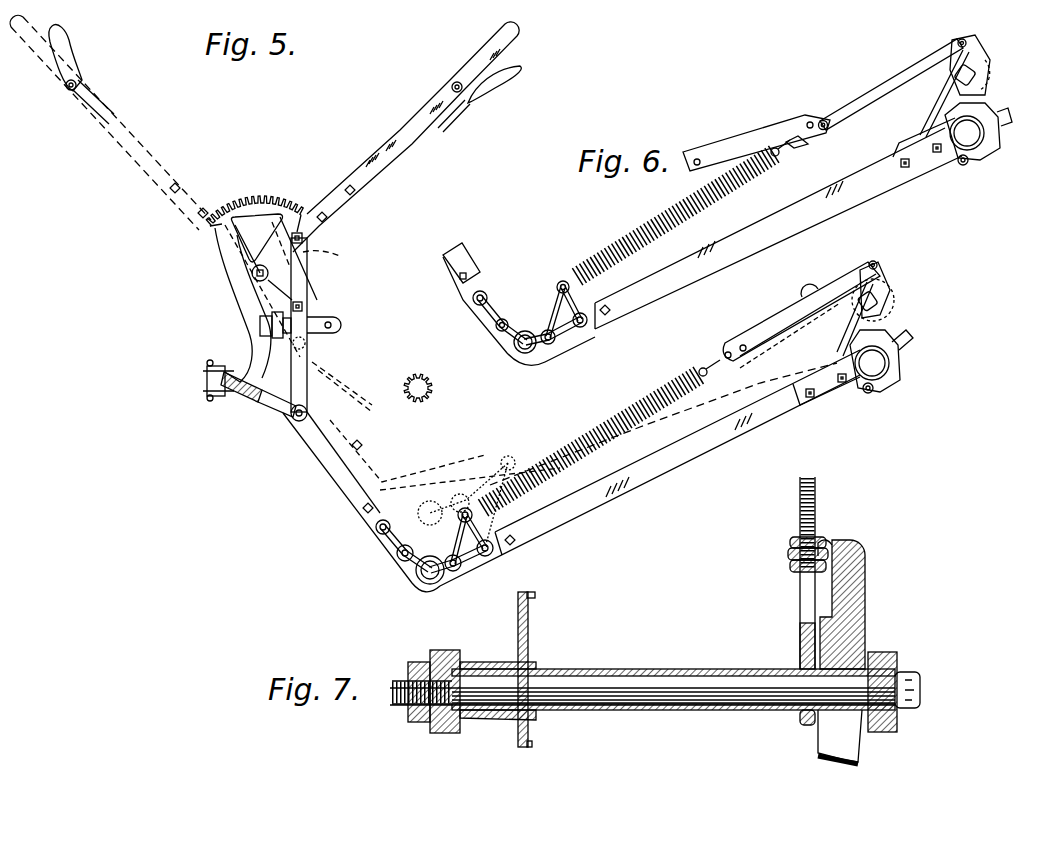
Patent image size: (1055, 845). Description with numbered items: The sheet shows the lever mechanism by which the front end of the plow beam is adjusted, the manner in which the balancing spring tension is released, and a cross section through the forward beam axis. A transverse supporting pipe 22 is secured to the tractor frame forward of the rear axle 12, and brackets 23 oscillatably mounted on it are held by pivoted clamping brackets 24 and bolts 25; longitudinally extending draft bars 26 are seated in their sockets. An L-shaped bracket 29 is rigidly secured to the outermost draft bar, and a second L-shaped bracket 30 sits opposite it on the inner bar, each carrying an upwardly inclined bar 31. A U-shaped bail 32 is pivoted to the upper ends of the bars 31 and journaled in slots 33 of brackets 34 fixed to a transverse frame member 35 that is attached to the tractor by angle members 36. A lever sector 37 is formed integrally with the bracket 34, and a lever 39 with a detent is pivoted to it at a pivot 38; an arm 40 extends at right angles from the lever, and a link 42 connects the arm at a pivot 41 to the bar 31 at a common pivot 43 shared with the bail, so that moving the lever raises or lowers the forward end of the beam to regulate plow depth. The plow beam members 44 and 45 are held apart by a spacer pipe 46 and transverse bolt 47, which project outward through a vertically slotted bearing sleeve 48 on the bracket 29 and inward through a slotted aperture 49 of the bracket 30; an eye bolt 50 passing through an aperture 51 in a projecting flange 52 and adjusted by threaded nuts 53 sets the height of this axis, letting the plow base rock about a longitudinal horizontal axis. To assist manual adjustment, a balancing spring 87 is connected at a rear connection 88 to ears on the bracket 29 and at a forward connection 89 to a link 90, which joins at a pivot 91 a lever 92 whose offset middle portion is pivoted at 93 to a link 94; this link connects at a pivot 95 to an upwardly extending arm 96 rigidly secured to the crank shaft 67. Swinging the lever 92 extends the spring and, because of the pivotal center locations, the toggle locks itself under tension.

In FIG. 5, the rear axle 12 is at (413, 398).
In FIG. 5, the supporting beam or pipe 22 is at (891, 372).
In FIG. 6, the supporting beam or pipe 22 is at (977, 137).
In FIG. 5, the brackets 23 is at (838, 350).
In FIG. 6, the brackets 23 is at (942, 100).
In FIG. 5, the pivoted clamping brackets 24 is at (880, 392).
In FIG. 6, the pivoted clamping brackets 24 is at (970, 163).
In FIG. 5, the bolts 25 is at (909, 336).
In FIG. 5, the draft bars 26 is at (650, 481).
In FIG. 6, the draft bars 26 is at (727, 245).
In FIG. 5, the L-shaped bracket 29 is at (447, 577).
In FIG. 6, the L-shaped bracket 29 is at (540, 300).
In FIG. 7, the L-shaped bracket 29 is at (517, 643).
In FIG. 7, the second L-shaped bracket 30 is at (866, 592).
In FIG. 5, the upwardly inclined bars 31 is at (355, 420).
In FIG. 6, the upwardly inclined bars 31 is at (456, 265).
In FIG. 5, the U-shaped bail 32 is at (258, 408).
In FIG. 5, the slots 33 is at (206, 380).
In FIG. 5, the brackets 34 is at (252, 338).
In FIG. 5, the transverse frame member 35 is at (268, 313).
In FIG. 5, the angle members 36 is at (340, 322).
In FIG. 5, the lever sector 37 is at (260, 200).
In FIG. 5, the pivot 38 is at (250, 273).
In FIG. 5, the lever 39 is at (133, 135).
In FIG. 5, the arm 40 is at (285, 280).
In FIG. 5, the pivot 41 is at (306, 243).
In FIG. 5, the link 42 is at (298, 377).
In FIG. 5, the pivot 43 is at (302, 405).
In FIG. 7, the plow beam member 44 is at (887, 652).
In FIG. 7, the plow beam member 45 is at (446, 650).
In FIG. 7, the spacer tube or pipe 46 is at (621, 670).
In FIG. 7, the transverse bolt 47 is at (663, 693).
In FIG. 5, the bearing sleeve 48 is at (416, 574).
In FIG. 6, the bearing sleeve 48 is at (527, 335).
In FIG. 7, the bearing sleeve 48 is at (493, 721).
In FIG. 7, the vertically slotted aperture 49 is at (858, 747).
In FIG. 7, the eye bolt 50 is at (800, 638).
In FIG. 7, the aperture 51 is at (843, 537).
In FIG. 7, the outwardly projecting flange 52 is at (788, 553).
In FIG. 7, the threaded nuts 53 is at (797, 536).
In FIG. 5, the crank shaft 67 is at (893, 303).
In FIG. 6, the crank shaft 67 is at (990, 70).
In FIG. 5, the balancing springs 87 is at (620, 413).
In FIG. 6, the balancing springs 87 is at (642, 224).
In FIG. 5, the spring rear connection 88 is at (462, 466).
In FIG. 6, the spring rear connection 88 is at (553, 283).
In FIG. 5, the spring forward connection 89 is at (702, 367).
In FIG. 6, the spring forward connection 89 is at (777, 157).
In FIG. 6, the link 90 is at (792, 149).
In FIG. 5, the pivot 91 is at (750, 353).
In FIG. 6, the pivot 91 is at (810, 122).
In FIG. 5, the lever 92 is at (813, 305).
In FIG. 6, the lever 92 is at (750, 132).
In FIG. 5, the pivot 93 is at (733, 360).
In FIG. 6, the pivot 93 is at (835, 120).
In FIG. 5, the link 94 is at (868, 270).
In FIG. 6, the link 94 is at (865, 107).
In FIG. 5, the pivot 95 is at (878, 266).
In FIG. 6, the pivot 95 is at (967, 35).
In FIG. 5, the upwardly extending arm 96 is at (884, 285).
In FIG. 6, the upwardly extending arm 96 is at (970, 55).